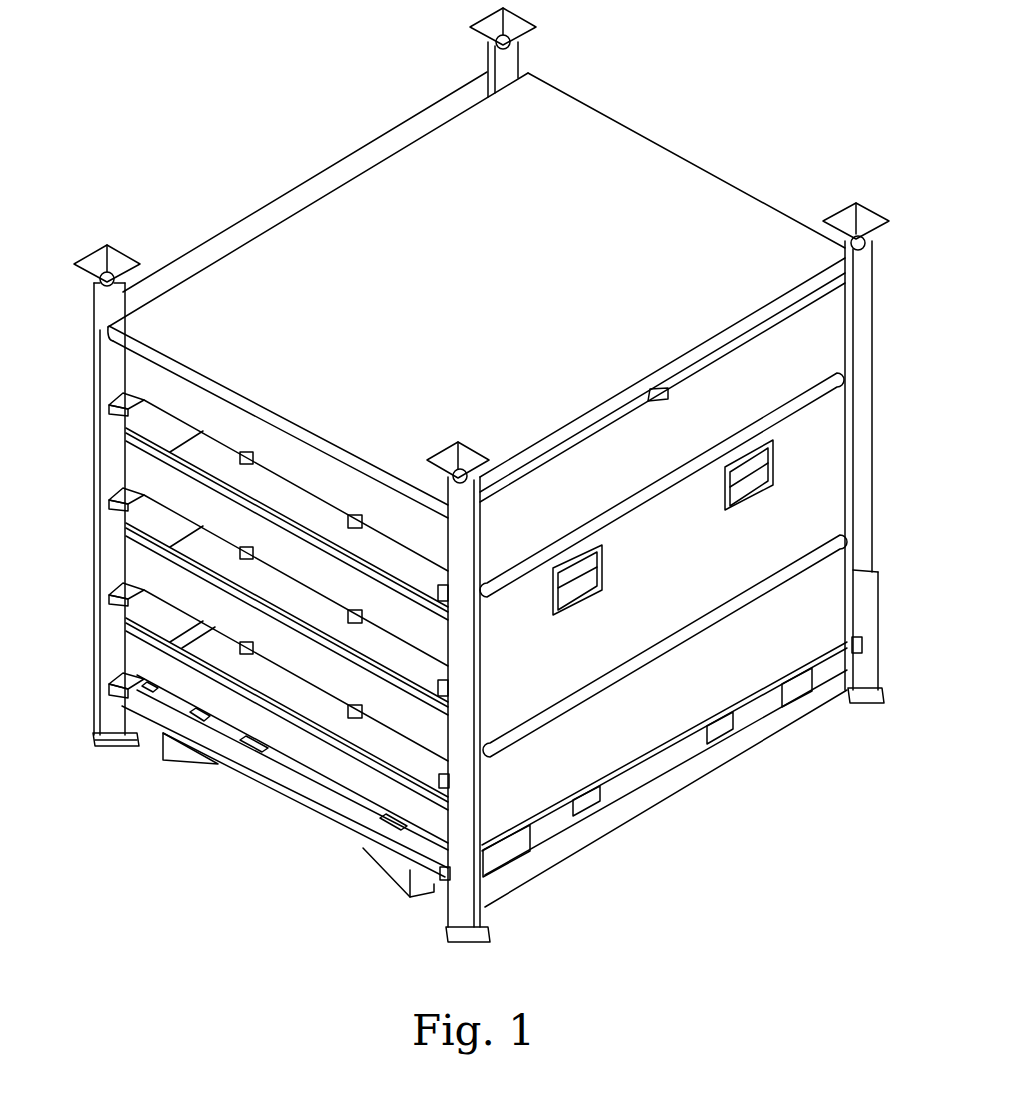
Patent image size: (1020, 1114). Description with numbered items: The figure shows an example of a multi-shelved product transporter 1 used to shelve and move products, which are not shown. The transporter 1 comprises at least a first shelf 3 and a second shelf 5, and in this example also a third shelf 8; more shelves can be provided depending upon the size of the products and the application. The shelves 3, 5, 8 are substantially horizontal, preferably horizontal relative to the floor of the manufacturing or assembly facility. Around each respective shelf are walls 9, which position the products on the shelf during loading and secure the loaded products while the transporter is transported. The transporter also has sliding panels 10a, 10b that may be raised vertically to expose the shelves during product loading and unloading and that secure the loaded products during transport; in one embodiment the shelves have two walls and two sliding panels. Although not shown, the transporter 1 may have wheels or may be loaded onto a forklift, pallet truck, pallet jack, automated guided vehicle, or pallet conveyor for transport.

The multi-shelved product transporter 1 is at (682, 132).
The first shelf 3 is at (203, 462).
The second shelf 5 is at (203, 545).
The third shelf 8 is at (217, 642).
The walls 9 is at (432, 632).
The sliding panel 10a is at (673, 590).
The sliding panel 10b is at (370, 118).